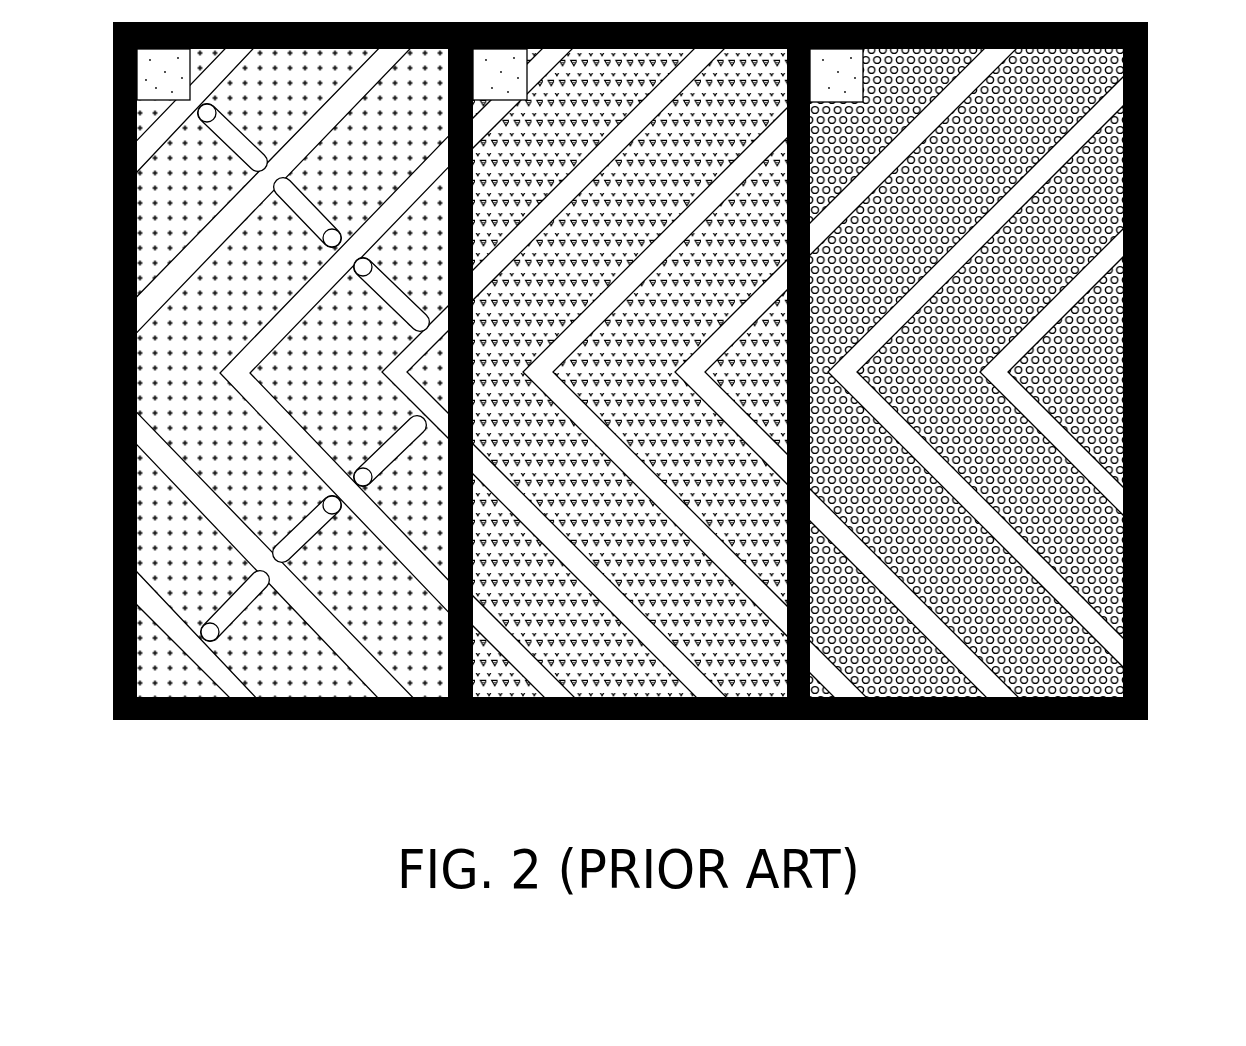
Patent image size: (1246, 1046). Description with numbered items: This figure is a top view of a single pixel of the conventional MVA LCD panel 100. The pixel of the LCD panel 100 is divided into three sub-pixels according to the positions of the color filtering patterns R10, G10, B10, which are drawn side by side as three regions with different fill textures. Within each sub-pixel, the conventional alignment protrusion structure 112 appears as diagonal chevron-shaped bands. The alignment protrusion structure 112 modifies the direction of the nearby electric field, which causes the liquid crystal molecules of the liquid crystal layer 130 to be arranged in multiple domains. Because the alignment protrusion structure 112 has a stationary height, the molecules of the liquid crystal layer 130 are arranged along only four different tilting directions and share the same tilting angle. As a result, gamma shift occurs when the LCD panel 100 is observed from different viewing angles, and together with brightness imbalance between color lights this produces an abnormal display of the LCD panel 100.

The MVA LCD panel 100 is at (1228, 722).
The alignment protrusion structure 112 is at (175, 630).
The liquid crystal layer 130 is at (330, 539).
The color filtering pattern R10 is at (320, 408).
The color filtering pattern G10 is at (607, 664).
The color filtering pattern B10 is at (897, 664).